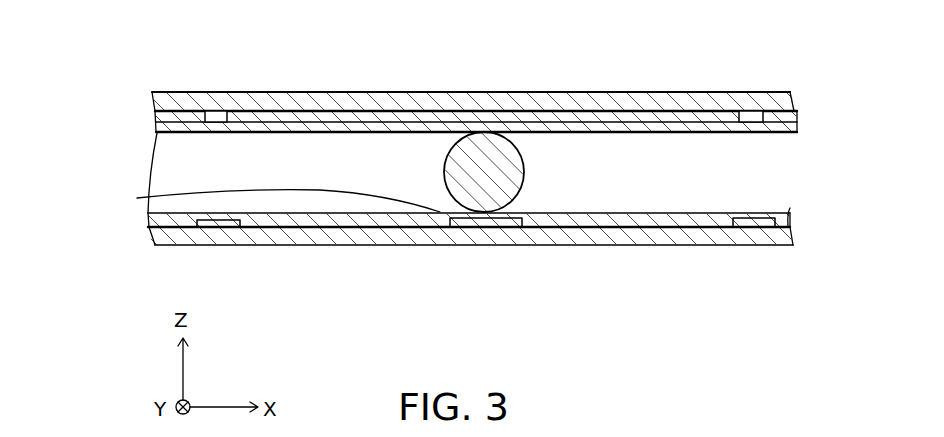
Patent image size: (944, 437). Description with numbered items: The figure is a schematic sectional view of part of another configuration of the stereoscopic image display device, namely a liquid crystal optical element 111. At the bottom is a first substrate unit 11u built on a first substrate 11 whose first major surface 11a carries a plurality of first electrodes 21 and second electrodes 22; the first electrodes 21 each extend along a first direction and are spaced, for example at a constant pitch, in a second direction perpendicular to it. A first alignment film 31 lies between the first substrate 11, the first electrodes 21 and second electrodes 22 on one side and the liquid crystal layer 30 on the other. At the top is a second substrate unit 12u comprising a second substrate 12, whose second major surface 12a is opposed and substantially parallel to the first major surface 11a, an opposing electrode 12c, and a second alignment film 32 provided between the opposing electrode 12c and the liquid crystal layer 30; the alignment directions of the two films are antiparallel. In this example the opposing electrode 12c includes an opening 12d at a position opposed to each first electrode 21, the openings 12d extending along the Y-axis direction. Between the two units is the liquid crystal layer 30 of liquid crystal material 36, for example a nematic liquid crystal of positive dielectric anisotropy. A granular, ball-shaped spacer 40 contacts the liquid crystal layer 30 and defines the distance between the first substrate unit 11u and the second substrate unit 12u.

The first substrate 11 is at (180, 240).
The first major surface 11a is at (790, 222).
The first substrate unit 11u is at (100, 192).
The second substrate 12 is at (170, 103).
The second major surface 12a is at (790, 108).
The opposing electrode 12c is at (172, 116).
The opening 12d is at (220, 113).
The second substrate unit 12u is at (100, 50).
The first electrode 21 is at (197, 220).
The second electrode 22 is at (447, 208).
The liquid crystal layer 30 is at (154, 168).
The first alignment film 31 is at (180, 227).
The second alignment film 32 is at (172, 126).
The liquid crystal material 36 is at (170, 145).
The spacer 40 is at (483, 142).
The liquid crystal optical element 111 is at (769, 91).